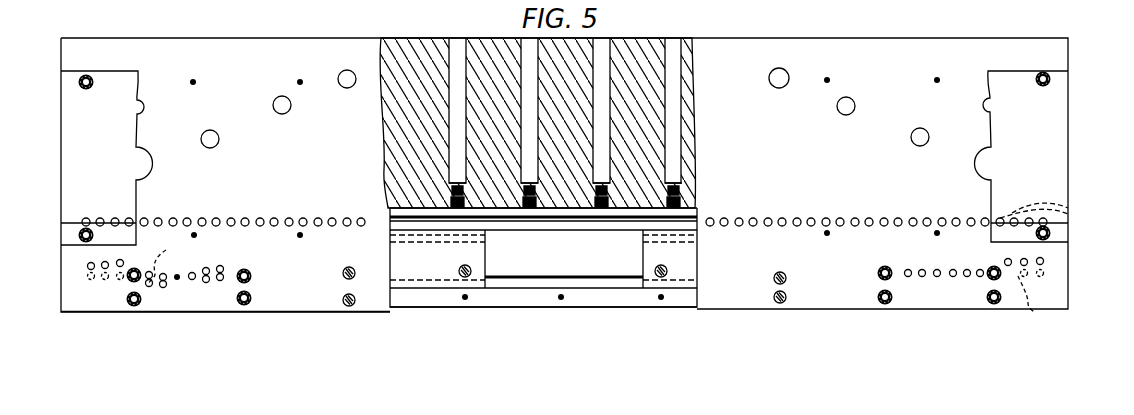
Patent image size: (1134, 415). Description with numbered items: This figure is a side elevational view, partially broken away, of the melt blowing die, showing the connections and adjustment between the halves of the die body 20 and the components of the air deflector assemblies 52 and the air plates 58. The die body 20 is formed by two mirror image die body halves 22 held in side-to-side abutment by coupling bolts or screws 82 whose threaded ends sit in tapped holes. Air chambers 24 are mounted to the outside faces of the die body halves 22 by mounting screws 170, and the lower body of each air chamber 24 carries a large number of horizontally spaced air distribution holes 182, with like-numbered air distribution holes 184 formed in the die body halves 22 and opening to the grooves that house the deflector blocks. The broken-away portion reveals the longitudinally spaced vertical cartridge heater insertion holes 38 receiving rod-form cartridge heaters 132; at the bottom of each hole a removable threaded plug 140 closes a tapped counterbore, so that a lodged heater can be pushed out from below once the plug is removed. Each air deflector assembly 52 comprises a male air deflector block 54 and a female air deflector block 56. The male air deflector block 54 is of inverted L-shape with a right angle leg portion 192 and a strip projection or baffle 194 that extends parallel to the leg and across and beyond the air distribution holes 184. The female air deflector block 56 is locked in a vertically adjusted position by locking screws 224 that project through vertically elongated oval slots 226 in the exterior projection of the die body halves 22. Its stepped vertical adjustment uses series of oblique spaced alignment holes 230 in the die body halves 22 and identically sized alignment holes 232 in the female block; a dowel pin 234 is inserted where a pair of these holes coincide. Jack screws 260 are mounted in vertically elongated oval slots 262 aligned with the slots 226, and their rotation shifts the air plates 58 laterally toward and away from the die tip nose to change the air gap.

The die body 20 is at (1069, 281).
The die body halves 22 is at (690, 42).
The air chambers 24 is at (1050, 148).
The cartridge heater insertion holes 38 is at (674, 88).
The air deflector assemblies 52 is at (686, 223).
The male air deflector block 54 is at (404, 208).
The female air deflector block 56 is at (690, 270).
The air plates 58 is at (500, 308).
The coupling bolts or screws 82 is at (912, 133).
The cartridge heaters 132 is at (676, 137).
The threaded plug 140 is at (682, 201).
The mounting screws 170 is at (1052, 79).
The air distribution holes 182 is at (1070, 208).
The air distribution holes 184 is at (860, 222).
The leg portion 192 is at (586, 266).
The strip projection or baffle 194 is at (520, 231).
The locking screws 224 is at (655, 277).
The oval elongated slots 226 is at (780, 270).
The alignment holes 230 is at (215, 268).
The alignment holes 232 is at (1034, 319).
The dowel pin 234 is at (190, 278).
The jack screws 260 is at (785, 301).
The oval slots 262 is at (664, 300).